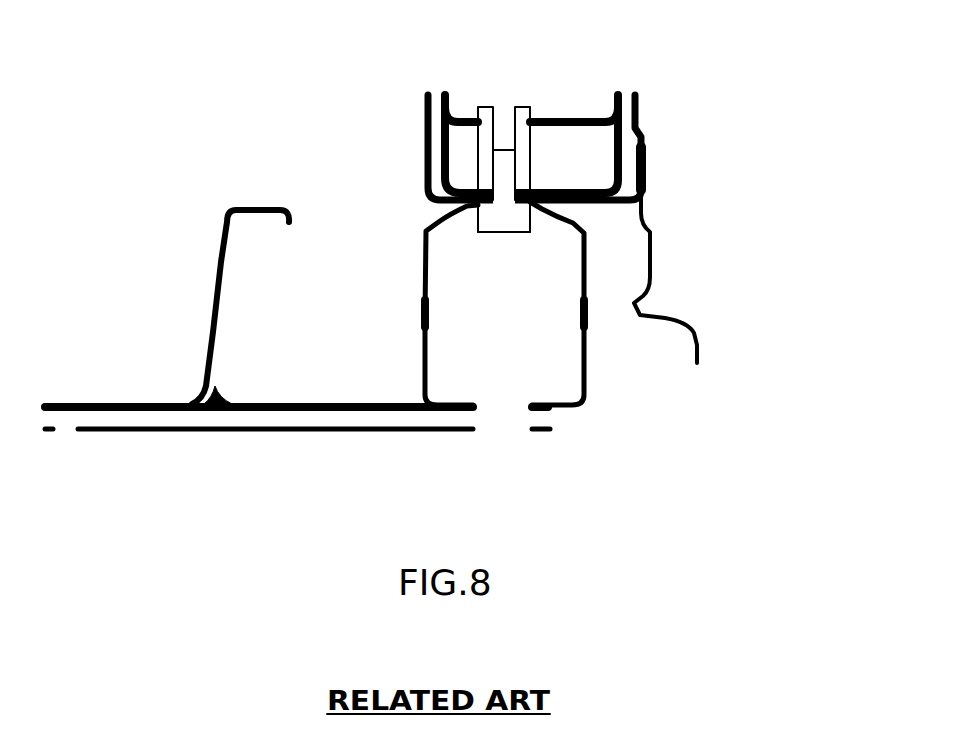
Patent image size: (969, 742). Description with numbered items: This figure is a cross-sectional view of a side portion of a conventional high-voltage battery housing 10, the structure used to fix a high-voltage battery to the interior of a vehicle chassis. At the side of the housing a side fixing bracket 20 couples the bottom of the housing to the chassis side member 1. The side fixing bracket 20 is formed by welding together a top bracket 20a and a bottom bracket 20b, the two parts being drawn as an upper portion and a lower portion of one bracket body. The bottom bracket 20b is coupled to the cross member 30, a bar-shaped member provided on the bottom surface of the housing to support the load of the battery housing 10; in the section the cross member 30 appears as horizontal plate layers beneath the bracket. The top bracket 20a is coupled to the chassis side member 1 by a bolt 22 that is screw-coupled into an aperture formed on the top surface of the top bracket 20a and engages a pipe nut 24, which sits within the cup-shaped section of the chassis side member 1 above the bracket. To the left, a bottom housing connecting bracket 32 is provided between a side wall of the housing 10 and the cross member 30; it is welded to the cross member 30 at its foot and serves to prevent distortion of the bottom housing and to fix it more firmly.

The chassis side member 1 is at (640, 178).
The high-voltage battery housing 10 is at (218, 250).
The side fixing bracket 20 is at (649, 303).
The top bracket 20a is at (590, 258).
The bottom bracket 20b is at (588, 363).
The bolt 22 is at (510, 222).
The pipe nut 24 is at (522, 120).
The cross member 30 is at (190, 428).
The bottom housing connecting bracket 32 is at (216, 397).